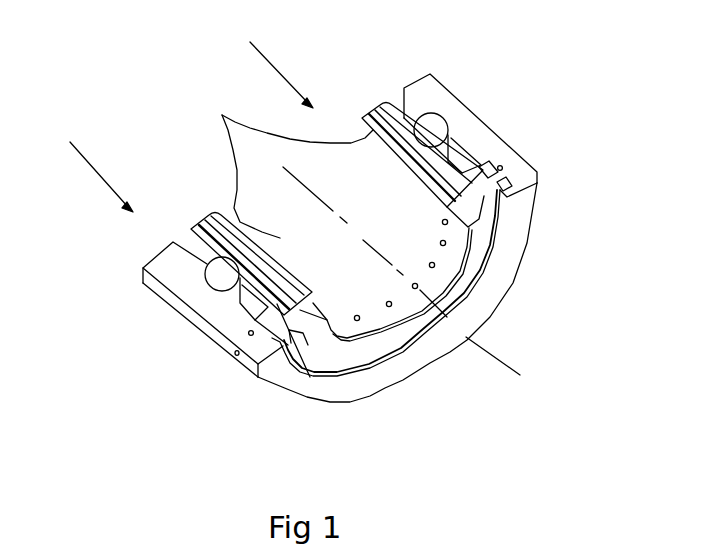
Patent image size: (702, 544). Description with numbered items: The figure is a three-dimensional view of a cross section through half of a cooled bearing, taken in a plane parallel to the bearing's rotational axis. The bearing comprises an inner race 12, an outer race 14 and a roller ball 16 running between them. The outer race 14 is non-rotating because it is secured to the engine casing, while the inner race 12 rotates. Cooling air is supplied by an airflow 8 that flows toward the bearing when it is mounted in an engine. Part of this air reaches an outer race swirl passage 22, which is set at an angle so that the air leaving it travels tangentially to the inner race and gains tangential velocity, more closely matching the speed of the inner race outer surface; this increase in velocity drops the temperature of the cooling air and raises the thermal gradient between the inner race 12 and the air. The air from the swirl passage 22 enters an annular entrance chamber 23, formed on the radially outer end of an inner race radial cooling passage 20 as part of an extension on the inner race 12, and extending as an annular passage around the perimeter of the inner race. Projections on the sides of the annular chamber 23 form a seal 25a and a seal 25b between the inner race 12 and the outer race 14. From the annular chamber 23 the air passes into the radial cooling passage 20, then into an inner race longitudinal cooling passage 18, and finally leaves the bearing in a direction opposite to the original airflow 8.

The airflow 8 is at (267, 57).
The inner race 12 is at (386, 108).
The outer race 14 is at (424, 90).
The roller ball 16 is at (433, 128).
The inner race longitudinal cooling passage 18 is at (224, 116).
The inner race radial cooling passage 20 is at (435, 264).
The outer race swirl passage 22 is at (503, 167).
The annular entrance chamber 23 is at (510, 176).
The seal 25a is at (481, 166).
The seal 25b is at (498, 188).